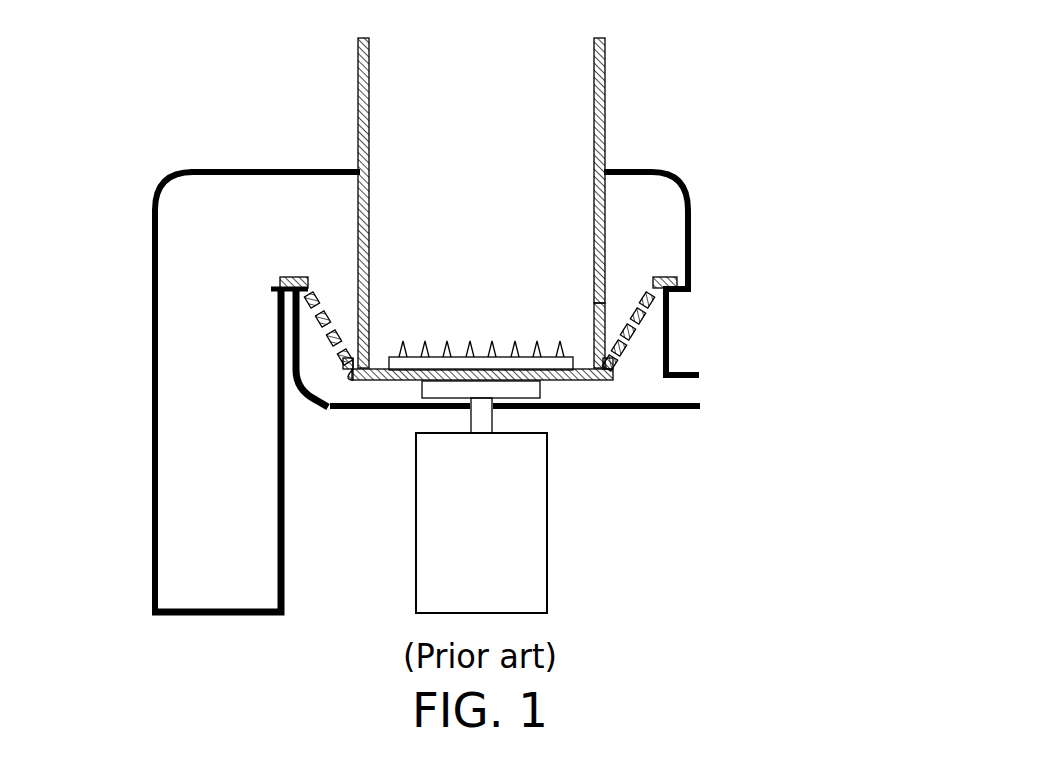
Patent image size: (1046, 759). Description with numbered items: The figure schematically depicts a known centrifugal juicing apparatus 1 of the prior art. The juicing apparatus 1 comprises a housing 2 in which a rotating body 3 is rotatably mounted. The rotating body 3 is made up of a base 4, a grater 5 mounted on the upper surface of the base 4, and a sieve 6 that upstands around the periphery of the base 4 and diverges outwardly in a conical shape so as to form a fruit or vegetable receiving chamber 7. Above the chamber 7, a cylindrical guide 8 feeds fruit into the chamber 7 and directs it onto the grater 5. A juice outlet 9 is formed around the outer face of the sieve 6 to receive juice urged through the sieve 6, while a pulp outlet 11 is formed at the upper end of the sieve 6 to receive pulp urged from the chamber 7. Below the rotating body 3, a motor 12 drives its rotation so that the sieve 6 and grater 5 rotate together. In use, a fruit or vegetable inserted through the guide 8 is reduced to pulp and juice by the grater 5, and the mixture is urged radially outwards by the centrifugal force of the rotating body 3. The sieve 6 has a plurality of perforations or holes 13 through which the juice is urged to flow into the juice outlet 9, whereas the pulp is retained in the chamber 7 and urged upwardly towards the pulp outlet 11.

The juicing apparatus 1 is at (118, 82).
The housing 2 is at (693, 216).
The rotating body 3 is at (572, 380).
The base 4 is at (389, 375).
The grater 5 is at (483, 360).
The sieve 6 is at (634, 328).
The fruit or vegetable receiving chamber 7 is at (604, 326).
The cylindrical guide 8 is at (603, 92).
The juice outlet 9 is at (681, 396).
The pulp outlet 11 is at (261, 182).
The motor 12 is at (547, 558).
The perforations or holes 13 is at (332, 338).